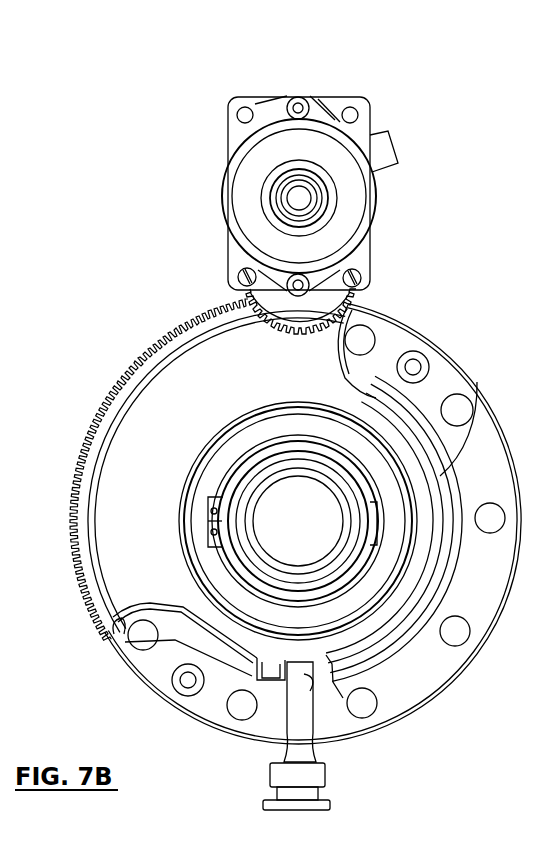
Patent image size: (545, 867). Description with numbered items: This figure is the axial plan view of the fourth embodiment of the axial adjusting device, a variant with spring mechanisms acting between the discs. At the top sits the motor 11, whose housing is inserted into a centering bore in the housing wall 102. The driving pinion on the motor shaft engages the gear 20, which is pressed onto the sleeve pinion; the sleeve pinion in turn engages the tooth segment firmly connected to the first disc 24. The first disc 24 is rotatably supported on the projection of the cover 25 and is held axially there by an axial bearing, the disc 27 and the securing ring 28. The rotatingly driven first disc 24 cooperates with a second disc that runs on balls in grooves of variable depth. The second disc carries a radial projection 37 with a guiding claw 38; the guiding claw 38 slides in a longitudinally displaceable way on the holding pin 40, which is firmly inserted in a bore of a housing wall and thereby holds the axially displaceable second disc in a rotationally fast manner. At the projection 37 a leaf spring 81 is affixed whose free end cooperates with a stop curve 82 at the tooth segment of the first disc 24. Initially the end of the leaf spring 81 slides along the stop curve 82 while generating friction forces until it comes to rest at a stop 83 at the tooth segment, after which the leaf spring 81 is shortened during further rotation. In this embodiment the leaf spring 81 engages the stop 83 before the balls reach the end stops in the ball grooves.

The motor 11 is at (322, 120).
The housing wall 102 is at (366, 110).
The gear 20 is at (360, 282).
The first disc 24 is at (362, 412).
The cover 25 is at (440, 372).
The disc 27 is at (385, 470).
The securing ring 28 is at (385, 515).
The radial projection 37 is at (345, 697).
The guiding claw 38 is at (305, 677).
The holding pin 40 is at (302, 724).
The leaf spring 81 is at (152, 603).
The stop curve 82 is at (157, 618).
The stop 83 is at (120, 630).